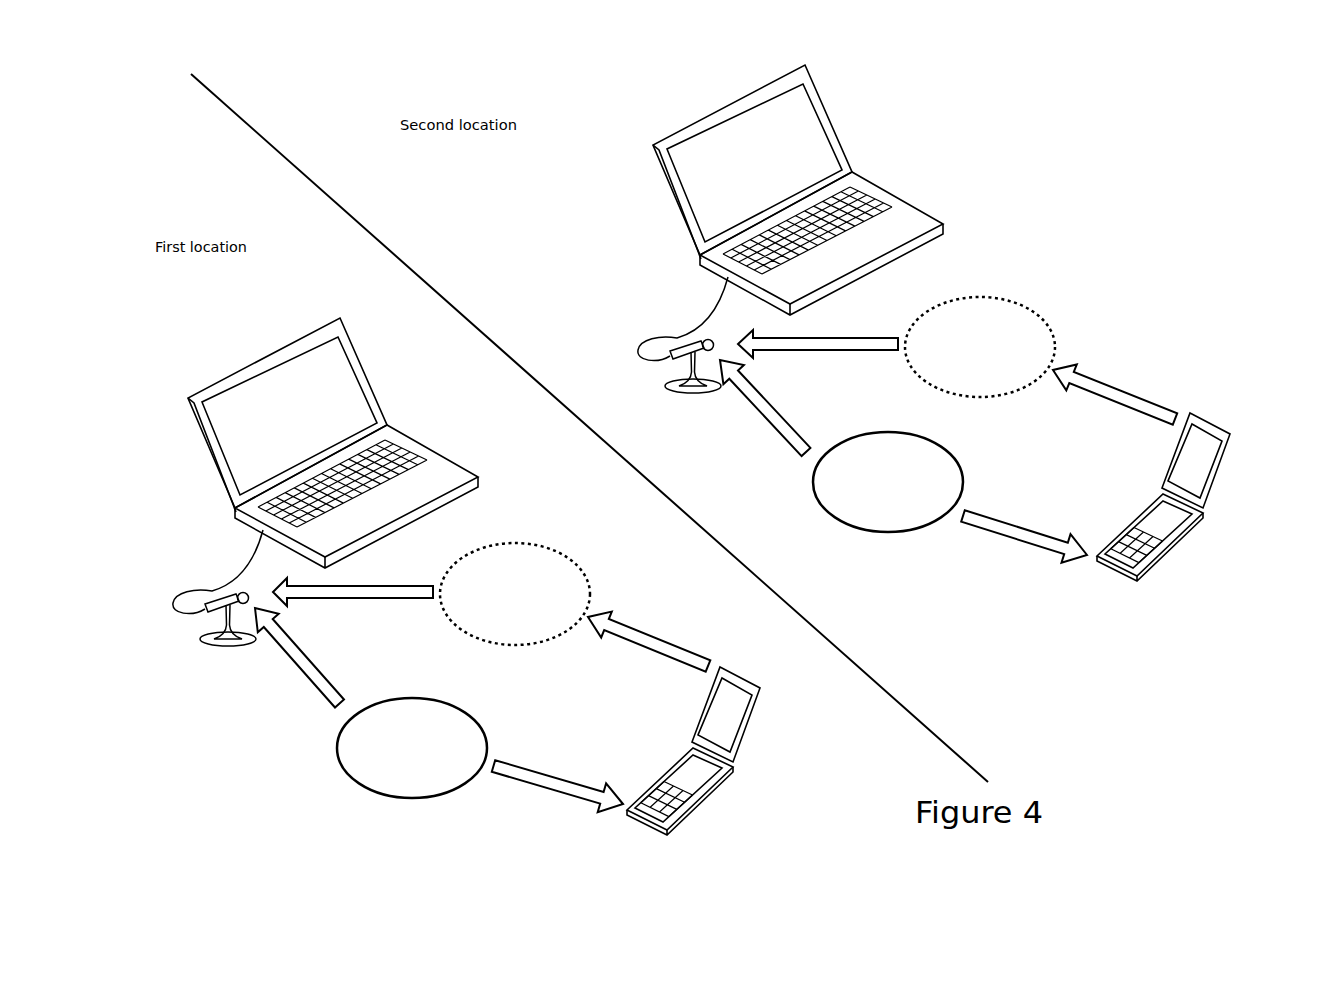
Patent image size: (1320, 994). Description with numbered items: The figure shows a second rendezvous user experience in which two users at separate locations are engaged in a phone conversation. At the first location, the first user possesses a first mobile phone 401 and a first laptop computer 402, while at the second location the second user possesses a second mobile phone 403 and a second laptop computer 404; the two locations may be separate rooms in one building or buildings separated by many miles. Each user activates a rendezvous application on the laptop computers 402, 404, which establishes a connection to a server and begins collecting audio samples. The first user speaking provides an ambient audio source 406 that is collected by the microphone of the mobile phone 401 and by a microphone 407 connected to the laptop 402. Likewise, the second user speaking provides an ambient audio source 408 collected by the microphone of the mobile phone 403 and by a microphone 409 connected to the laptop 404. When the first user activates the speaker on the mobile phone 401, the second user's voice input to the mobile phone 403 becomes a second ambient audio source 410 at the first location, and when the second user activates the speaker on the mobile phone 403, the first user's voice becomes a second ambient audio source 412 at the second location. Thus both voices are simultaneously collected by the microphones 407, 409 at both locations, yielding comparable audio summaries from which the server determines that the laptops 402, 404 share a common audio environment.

The first mobile phone 401 is at (762, 753).
The first laptop computer 402 is at (242, 338).
The second mobile phone 403 is at (1178, 577).
The second laptop computer 404 is at (667, 110).
The ambient audio source 406 is at (366, 778).
The microphone 407 is at (212, 642).
The ambient audio source 408 is at (877, 518).
The microphone 409 is at (683, 390).
The second ambient audio source 410 is at (548, 551).
The second ambient audio source 412 is at (1017, 303).